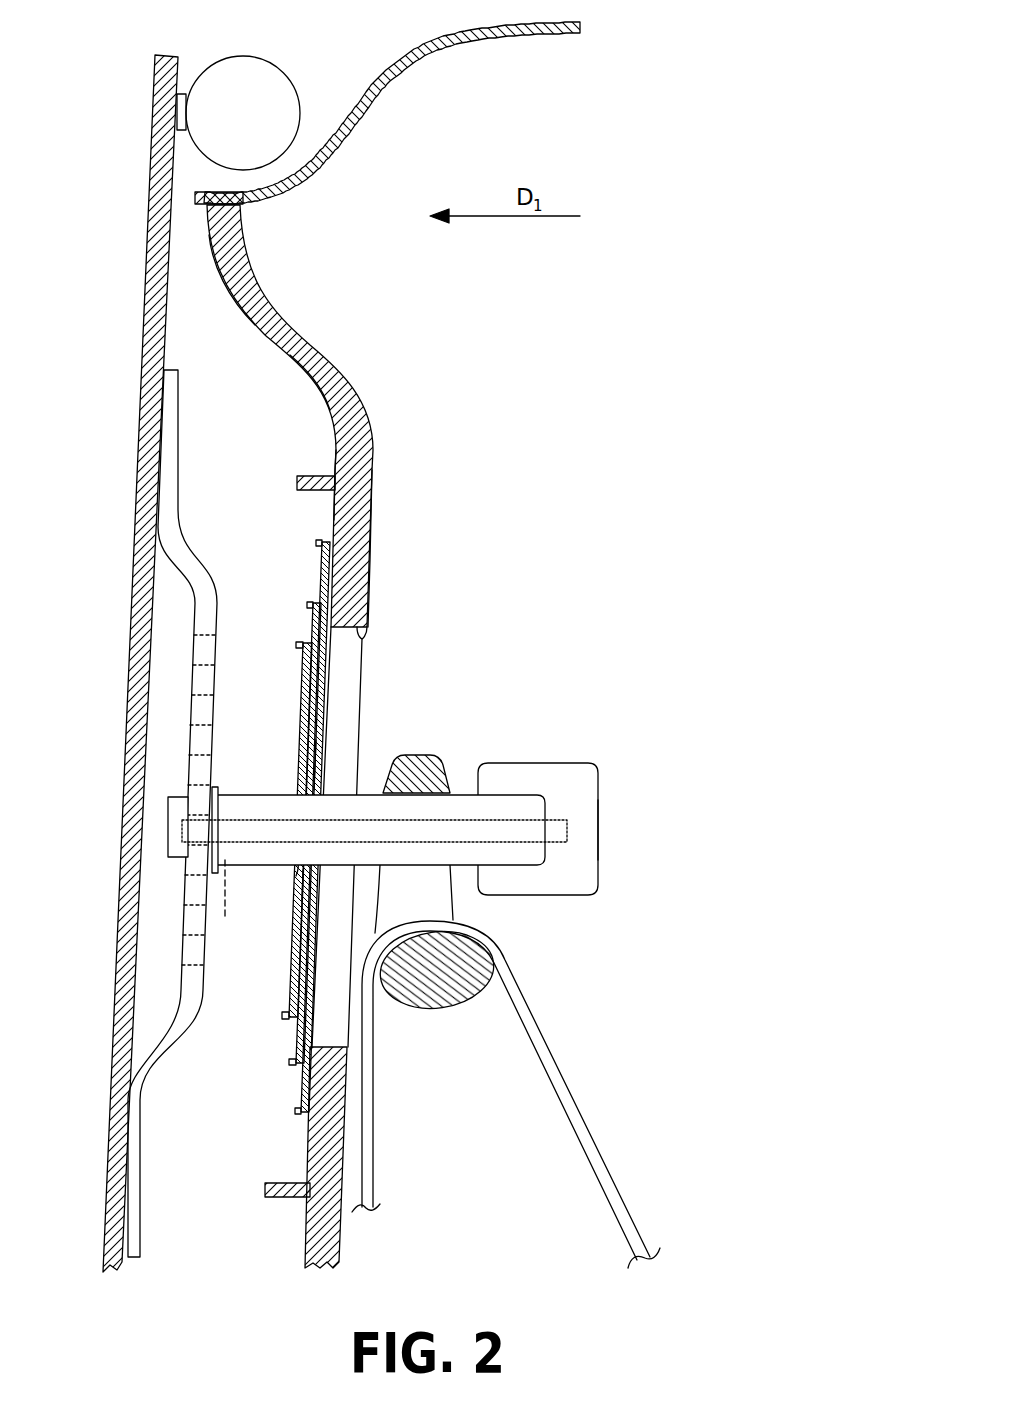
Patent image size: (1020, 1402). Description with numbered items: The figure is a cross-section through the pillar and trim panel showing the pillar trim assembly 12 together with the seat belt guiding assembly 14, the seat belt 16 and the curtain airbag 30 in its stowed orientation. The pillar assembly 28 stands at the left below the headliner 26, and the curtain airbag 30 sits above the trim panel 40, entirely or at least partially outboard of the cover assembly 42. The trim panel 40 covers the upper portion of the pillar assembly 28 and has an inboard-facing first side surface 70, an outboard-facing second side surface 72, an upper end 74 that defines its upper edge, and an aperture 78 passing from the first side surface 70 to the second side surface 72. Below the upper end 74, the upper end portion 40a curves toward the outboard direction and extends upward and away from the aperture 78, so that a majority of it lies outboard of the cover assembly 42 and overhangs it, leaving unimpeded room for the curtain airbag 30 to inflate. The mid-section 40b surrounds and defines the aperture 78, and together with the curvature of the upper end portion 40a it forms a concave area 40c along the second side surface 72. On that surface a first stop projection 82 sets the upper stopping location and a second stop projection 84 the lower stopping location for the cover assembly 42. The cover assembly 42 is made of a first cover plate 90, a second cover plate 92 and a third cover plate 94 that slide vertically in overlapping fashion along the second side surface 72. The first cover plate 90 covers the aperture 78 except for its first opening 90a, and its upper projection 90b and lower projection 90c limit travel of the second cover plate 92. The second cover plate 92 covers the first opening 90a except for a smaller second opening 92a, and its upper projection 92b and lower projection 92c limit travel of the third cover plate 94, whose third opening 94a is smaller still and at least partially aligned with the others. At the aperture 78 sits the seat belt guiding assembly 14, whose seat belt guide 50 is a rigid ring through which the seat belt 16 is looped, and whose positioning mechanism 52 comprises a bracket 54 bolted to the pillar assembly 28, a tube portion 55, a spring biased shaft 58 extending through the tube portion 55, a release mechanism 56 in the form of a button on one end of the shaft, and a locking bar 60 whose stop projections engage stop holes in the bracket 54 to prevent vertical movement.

The pillar trim assembly 12 is at (320, 710).
The seat belt guiding assembly 14 is at (432, 757).
The seat belt 16 is at (594, 1152).
The headliner 26 is at (433, 45).
The pillar assembly 28 is at (152, 232).
The curtain airbag 30 is at (265, 78).
The trim panel 40 is at (335, 736).
The upper end portion 40a is at (268, 307).
The mid-section 40b is at (362, 670).
The concave area 40c is at (312, 390).
The cover assembly 42 is at (298, 644).
The seat belt guide 50 is at (428, 1010).
The positioning mechanism 52 is at (555, 811).
The bracket 54 is at (185, 552).
The tube portion 55 is at (358, 851).
The release mechanism 56 is at (598, 811).
The spring biased shaft 58 is at (229, 900).
The locking bar 60 is at (183, 797).
The first side surface 70 is at (372, 562).
The second side surface 72 is at (334, 449).
The upper end 74 is at (215, 192).
The aperture 78 is at (366, 634).
The first stop projection 82 is at (300, 479).
The second stop projection 84 is at (268, 1190).
The first cover plate 90 is at (327, 822).
The first opening 90a is at (322, 748).
The upper projection 90b is at (320, 541).
The lower projection 90c is at (290, 1112).
The second cover plate 92 is at (299, 831).
The second opening 92a is at (307, 897).
The upper projection 92b is at (311, 604).
The lower projection 92c is at (285, 1064).
The third cover plate 94 is at (278, 815).
The third opening 94a is at (297, 858).